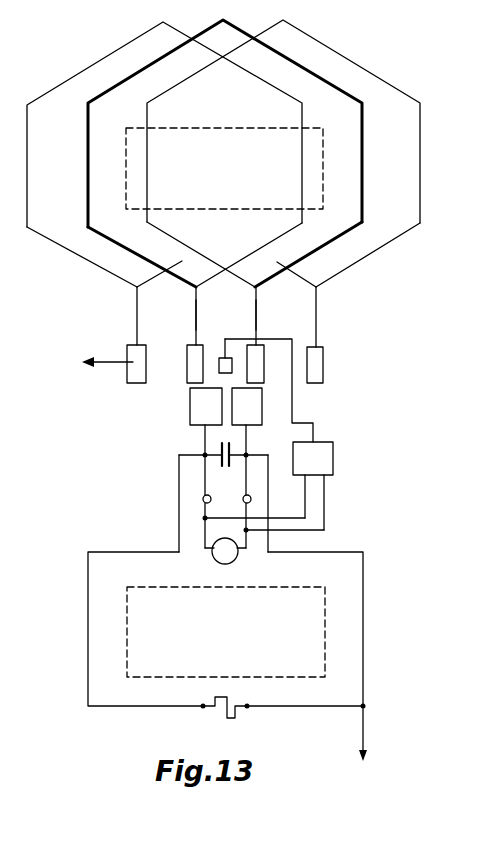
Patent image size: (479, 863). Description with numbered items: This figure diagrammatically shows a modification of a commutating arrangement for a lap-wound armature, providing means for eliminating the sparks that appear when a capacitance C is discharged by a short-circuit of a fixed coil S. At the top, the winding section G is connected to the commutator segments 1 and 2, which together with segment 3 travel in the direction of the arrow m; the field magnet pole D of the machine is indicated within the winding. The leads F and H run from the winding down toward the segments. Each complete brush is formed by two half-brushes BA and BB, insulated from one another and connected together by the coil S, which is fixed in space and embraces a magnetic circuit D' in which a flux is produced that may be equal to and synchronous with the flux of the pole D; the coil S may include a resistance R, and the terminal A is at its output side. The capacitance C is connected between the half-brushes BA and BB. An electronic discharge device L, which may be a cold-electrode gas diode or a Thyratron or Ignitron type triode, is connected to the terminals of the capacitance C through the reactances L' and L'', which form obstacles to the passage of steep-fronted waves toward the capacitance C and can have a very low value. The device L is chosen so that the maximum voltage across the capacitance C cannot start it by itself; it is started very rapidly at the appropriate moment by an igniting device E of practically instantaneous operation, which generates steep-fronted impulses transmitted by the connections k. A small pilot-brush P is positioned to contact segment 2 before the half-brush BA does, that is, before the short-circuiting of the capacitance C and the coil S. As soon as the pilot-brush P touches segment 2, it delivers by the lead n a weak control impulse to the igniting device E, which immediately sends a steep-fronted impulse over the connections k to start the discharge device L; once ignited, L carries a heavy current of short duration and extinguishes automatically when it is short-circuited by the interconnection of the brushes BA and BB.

The winding section G is at (237, 28).
The field magnet pole D is at (224, 168).
The arrow m is at (109, 336).
The commutator segment 1 is at (195, 335).
The commutator segment 2 is at (255, 335).
The commutator segment 3 is at (315, 335).
The lead F is at (186, 315).
The lead H is at (264, 315).
The pilot-brush P is at (222, 356).
The lead n is at (293, 405).
The half-brush BA is at (206, 406).
The half-brush BB is at (247, 406).
The capacitance C is at (223, 459).
The reactance L' is at (198, 486).
The reactance L'' is at (256, 492).
The connections k is at (273, 504).
The igniting device E is at (313, 458).
The electronic discharge device L is at (225, 541).
The fixed coil S is at (363, 624).
The magnetic circuit D' is at (226, 632).
The resistance R is at (225, 720).
The terminal A is at (370, 731).